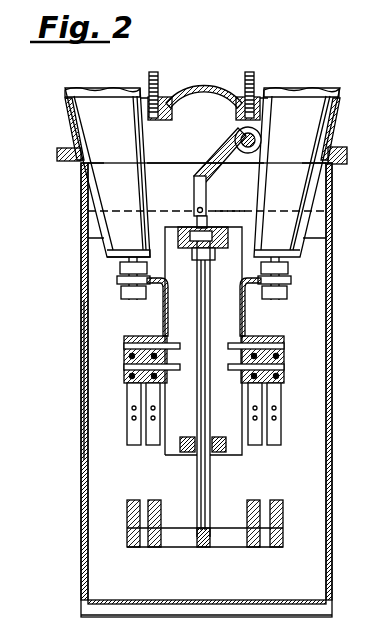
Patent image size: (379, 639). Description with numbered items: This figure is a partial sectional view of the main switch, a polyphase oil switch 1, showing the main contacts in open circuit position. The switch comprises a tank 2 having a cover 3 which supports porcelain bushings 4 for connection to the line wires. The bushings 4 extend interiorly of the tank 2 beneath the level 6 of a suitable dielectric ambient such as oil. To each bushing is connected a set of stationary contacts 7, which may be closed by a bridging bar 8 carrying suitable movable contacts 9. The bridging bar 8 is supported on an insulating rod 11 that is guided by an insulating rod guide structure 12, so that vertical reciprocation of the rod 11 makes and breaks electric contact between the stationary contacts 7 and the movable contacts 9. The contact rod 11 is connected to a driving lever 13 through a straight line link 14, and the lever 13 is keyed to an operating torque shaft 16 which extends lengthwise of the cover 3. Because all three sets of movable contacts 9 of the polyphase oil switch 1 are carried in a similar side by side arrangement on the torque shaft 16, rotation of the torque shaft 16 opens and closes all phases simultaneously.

The polyphase oil switch 1 is at (76, 295).
The tank 2 is at (80, 377).
The cover 3 is at (206, 86).
The porcelain bushings 4 is at (106, 100).
The level 6 is at (228, 210).
The stationary contacts 7 is at (152, 444).
The bridging bar 8 is at (233, 530).
The movable contacts 9 is at (136, 500).
The insulating rod 11 is at (200, 479).
The insulating rod guide structure 12 is at (236, 313).
The driving lever 13 is at (214, 160).
The straight line link 14 is at (195, 190).
The operating torque shaft 16 is at (240, 135).